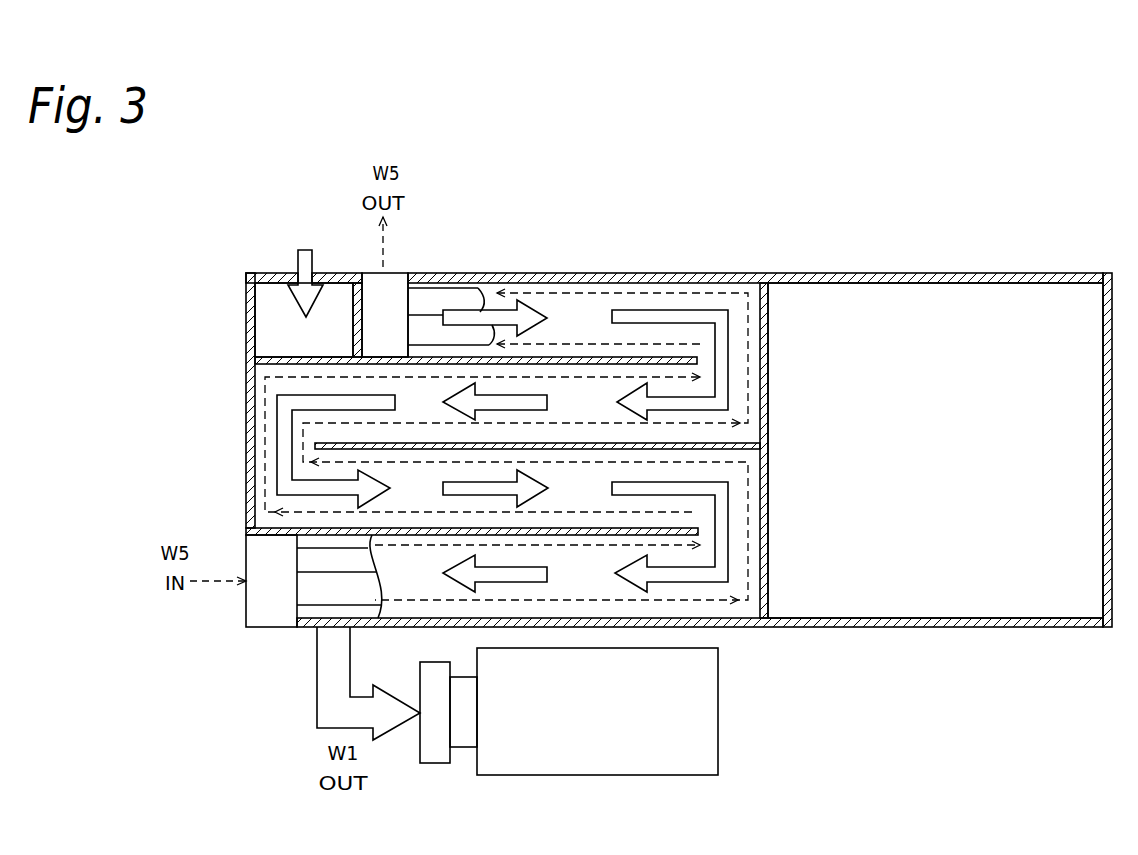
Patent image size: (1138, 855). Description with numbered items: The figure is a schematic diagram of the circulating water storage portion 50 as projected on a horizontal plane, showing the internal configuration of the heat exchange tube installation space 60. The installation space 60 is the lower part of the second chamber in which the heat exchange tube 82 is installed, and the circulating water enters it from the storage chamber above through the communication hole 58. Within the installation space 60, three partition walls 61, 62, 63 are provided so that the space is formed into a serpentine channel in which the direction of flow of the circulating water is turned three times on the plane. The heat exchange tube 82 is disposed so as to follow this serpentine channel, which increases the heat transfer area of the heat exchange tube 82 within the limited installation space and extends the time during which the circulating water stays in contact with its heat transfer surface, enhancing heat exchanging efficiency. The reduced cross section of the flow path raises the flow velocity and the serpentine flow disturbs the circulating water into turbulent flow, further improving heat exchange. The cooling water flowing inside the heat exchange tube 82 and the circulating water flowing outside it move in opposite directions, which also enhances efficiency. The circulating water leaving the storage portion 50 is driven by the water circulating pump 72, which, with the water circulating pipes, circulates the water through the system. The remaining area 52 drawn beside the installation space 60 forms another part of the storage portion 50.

The circulating water storage portion 50 is at (1040, 273).
The chamber 52 is at (977, 318).
The communication hole 58 is at (267, 318).
The heat exchange tube installation space 60 is at (514, 435).
The partition wall 61 is at (622, 358).
The partition wall 62 is at (667, 442).
The partition wall 63 is at (665, 535).
The water circulating pump 72 is at (612, 775).
The heat exchange tube 82 is at (430, 298).